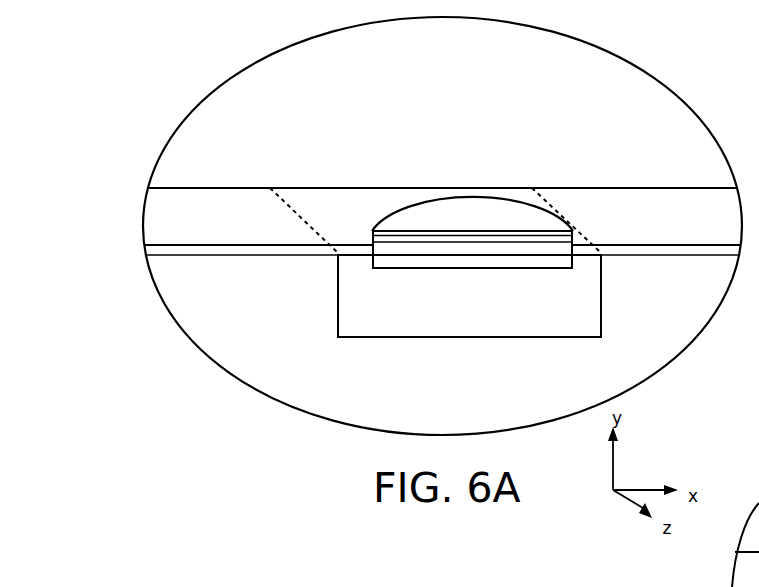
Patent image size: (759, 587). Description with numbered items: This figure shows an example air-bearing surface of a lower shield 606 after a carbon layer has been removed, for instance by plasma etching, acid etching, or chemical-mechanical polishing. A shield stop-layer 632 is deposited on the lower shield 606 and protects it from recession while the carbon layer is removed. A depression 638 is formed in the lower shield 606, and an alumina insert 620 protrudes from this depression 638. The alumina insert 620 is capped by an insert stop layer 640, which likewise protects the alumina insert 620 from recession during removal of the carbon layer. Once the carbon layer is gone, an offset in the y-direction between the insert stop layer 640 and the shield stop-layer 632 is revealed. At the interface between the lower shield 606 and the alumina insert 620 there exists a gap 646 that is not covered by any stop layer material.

The lower shield 606 is at (459, 315).
The alumina insert 620 is at (459, 265).
The shield stop-layer 632 is at (612, 255).
The depression 638 is at (428, 249).
The insert stop layer 640 is at (512, 231).
The gap 646 is at (586, 225).